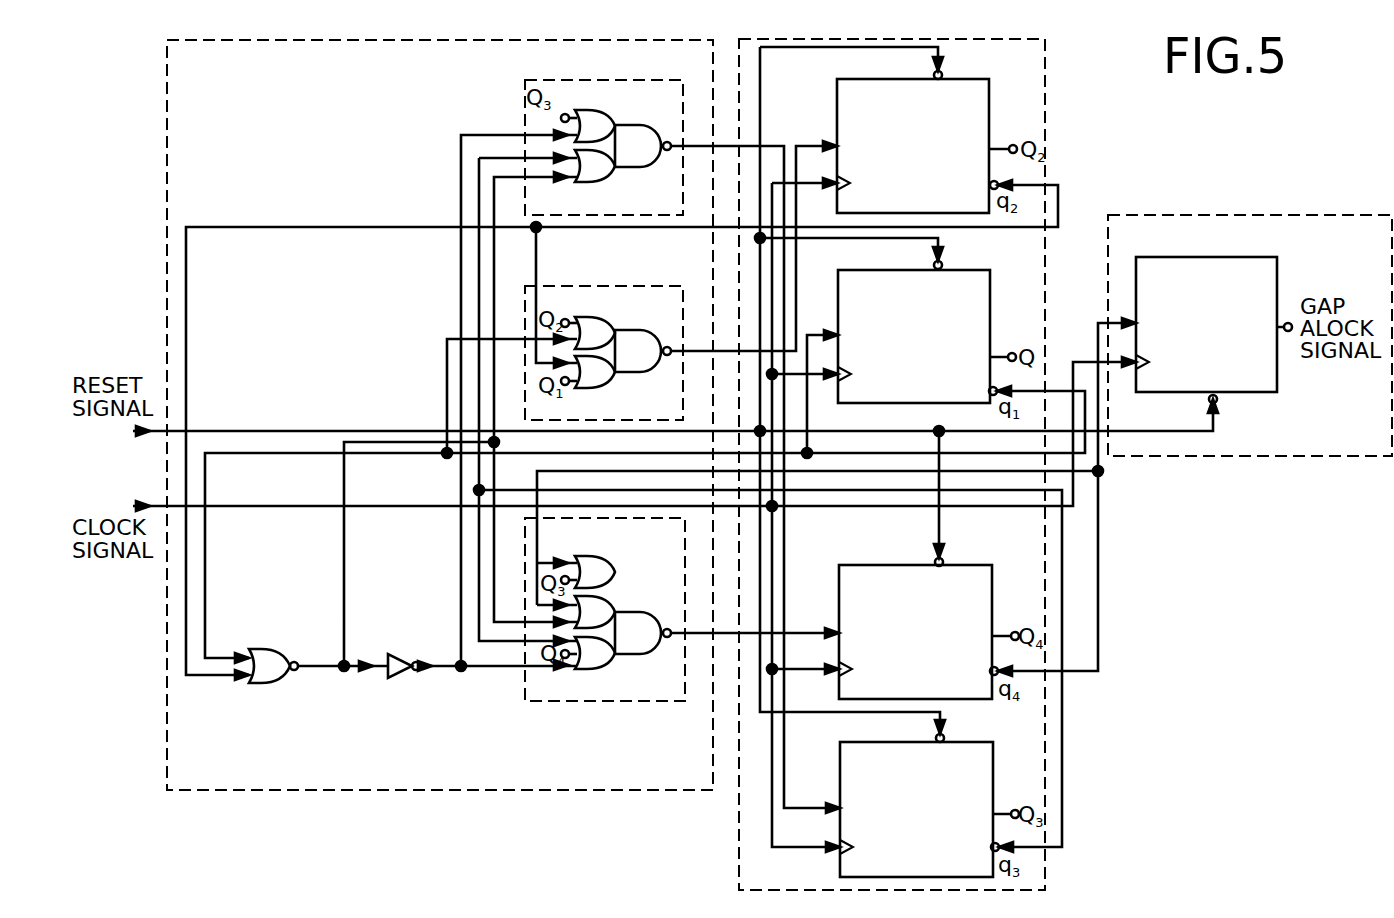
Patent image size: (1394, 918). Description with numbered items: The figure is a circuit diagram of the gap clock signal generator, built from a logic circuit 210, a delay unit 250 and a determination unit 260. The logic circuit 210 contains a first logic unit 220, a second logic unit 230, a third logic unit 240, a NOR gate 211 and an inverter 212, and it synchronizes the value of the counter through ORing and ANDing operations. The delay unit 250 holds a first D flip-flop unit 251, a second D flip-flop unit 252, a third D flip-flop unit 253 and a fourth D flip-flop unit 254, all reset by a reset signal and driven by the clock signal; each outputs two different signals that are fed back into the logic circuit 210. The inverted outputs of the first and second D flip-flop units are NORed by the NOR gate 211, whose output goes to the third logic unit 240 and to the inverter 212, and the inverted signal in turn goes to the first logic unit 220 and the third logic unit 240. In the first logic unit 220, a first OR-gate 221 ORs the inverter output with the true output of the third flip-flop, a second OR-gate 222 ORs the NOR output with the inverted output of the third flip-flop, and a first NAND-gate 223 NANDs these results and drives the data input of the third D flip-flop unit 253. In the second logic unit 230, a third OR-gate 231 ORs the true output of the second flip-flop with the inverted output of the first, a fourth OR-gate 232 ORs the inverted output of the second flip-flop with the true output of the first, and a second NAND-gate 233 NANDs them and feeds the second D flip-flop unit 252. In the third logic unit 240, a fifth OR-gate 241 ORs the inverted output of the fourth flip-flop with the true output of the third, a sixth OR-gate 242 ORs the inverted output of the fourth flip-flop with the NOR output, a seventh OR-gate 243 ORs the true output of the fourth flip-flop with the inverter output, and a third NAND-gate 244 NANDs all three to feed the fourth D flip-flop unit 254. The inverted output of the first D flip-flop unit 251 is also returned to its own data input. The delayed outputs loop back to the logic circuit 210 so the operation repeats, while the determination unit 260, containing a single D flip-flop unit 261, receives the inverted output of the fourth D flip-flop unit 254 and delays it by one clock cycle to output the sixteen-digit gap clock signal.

The logic circuit 210 is at (163, 203).
The NOR gate 211 is at (275, 636).
The inverter 212 is at (402, 655).
The first logic unit 220 is at (525, 102).
The first OR-gate 221 is at (620, 105).
The second OR-gate 222 is at (612, 178).
The first NAND-gate 223 is at (652, 128).
The second logic unit 230 is at (545, 287).
The third OR-gate 231 is at (612, 320).
The fourth OR-gate 232 is at (612, 385).
The second NAND-gate 233 is at (650, 333).
The third logic unit 240 is at (525, 682).
The fifth OR-gate 241 is at (608, 562).
The sixth OR-gate 242 is at (612, 604).
The seventh OR-gate 243 is at (612, 667).
The third NAND-gate 244 is at (652, 643).
The delay unit 250 is at (1050, 125).
The first D flip-flop unit 251 is at (965, 269).
The second D flip-flop unit 252 is at (972, 78).
The third D flip-flop unit 253 is at (968, 743).
The fourth D flip-flop unit 254 is at (968, 566).
The determination unit 260 is at (1160, 215).
The D flip-flop unit of determination unit 261 is at (1185, 257).